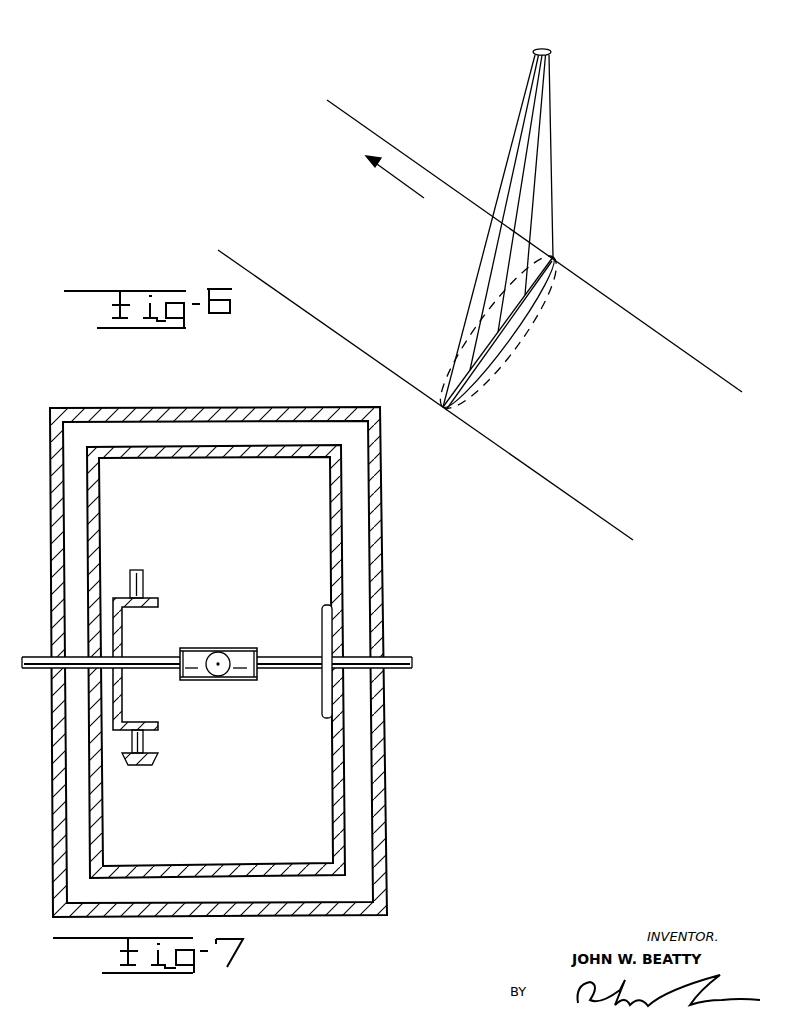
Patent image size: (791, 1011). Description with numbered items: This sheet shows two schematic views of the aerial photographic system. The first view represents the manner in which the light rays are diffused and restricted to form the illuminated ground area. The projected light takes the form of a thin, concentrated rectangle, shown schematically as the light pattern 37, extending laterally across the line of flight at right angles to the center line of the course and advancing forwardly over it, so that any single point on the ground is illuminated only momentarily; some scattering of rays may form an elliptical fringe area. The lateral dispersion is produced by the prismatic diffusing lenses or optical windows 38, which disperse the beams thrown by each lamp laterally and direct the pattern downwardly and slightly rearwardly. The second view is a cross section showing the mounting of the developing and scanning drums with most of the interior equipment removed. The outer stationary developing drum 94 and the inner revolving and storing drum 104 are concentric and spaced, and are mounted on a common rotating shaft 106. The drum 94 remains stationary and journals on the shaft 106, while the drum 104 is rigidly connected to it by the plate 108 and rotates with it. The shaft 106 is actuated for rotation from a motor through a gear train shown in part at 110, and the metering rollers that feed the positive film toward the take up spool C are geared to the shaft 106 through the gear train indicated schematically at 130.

In FIG. 6, the light pattern 37 is at (554, 256).
In FIG. 6, the prismatic diffusing lenses 38 is at (546, 48).
In FIG. 6, the take up spool C is at (600, 315).
In FIG. 7, the outer stationary developing drum 94 is at (377, 604).
In FIG. 7, the inner revolving and storing drum 104 is at (335, 793).
In FIG. 7, the shaft 106 is at (400, 657).
In FIG. 7, the plate 108 is at (325, 716).
In FIG. 7, the gear train 110 is at (141, 722).
In FIG. 7, the gear train 130 is at (144, 587).